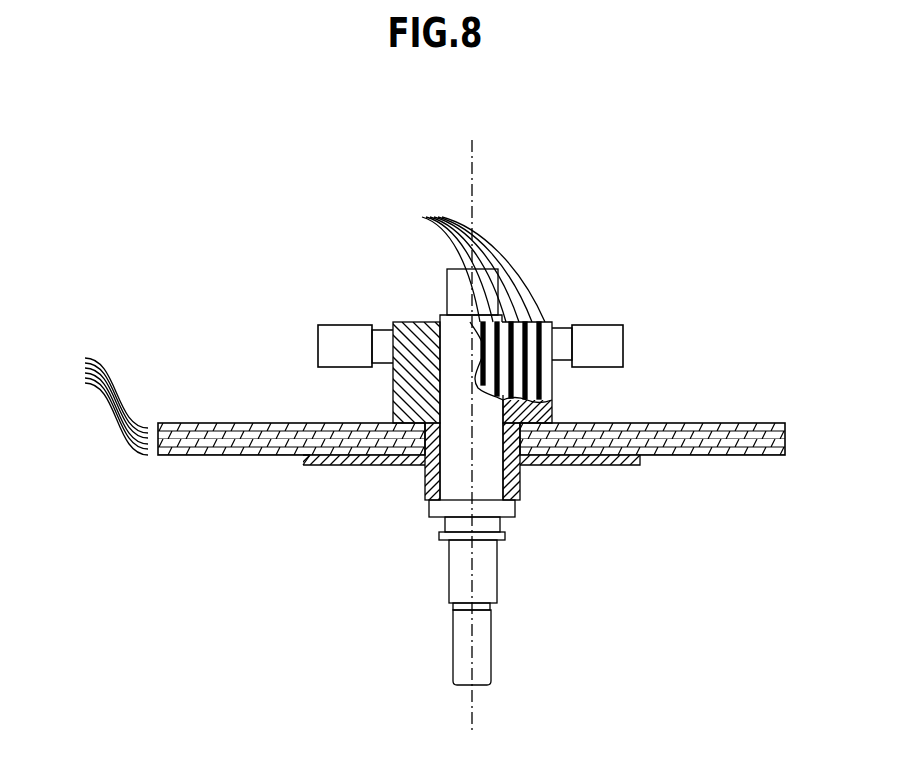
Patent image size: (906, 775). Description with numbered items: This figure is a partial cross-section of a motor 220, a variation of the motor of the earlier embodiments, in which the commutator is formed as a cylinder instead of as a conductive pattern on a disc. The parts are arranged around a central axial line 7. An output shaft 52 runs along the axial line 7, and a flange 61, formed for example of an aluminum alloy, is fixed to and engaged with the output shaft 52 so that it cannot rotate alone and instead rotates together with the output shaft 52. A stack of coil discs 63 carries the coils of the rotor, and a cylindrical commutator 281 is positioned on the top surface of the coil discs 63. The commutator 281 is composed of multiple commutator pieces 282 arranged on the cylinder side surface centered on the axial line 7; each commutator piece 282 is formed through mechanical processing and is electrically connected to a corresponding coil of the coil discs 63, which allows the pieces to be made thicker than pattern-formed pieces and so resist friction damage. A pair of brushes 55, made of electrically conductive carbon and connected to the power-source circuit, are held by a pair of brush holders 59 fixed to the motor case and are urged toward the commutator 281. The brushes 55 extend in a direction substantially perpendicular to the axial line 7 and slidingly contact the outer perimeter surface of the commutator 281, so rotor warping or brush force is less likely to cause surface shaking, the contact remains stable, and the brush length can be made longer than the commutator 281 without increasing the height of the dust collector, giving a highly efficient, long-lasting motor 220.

The motor 220 is at (91, 146).
The axial line 7 is at (474, 177).
The cylindrical commutator 281 is at (422, 312).
The commutator pieces 282 is at (460, 211).
The brushes 55 is at (380, 338).
The brush holders 59 is at (342, 350).
The coil discs 63 is at (75, 355).
The flange 61 is at (372, 466).
The output shaft 52 is at (452, 457).